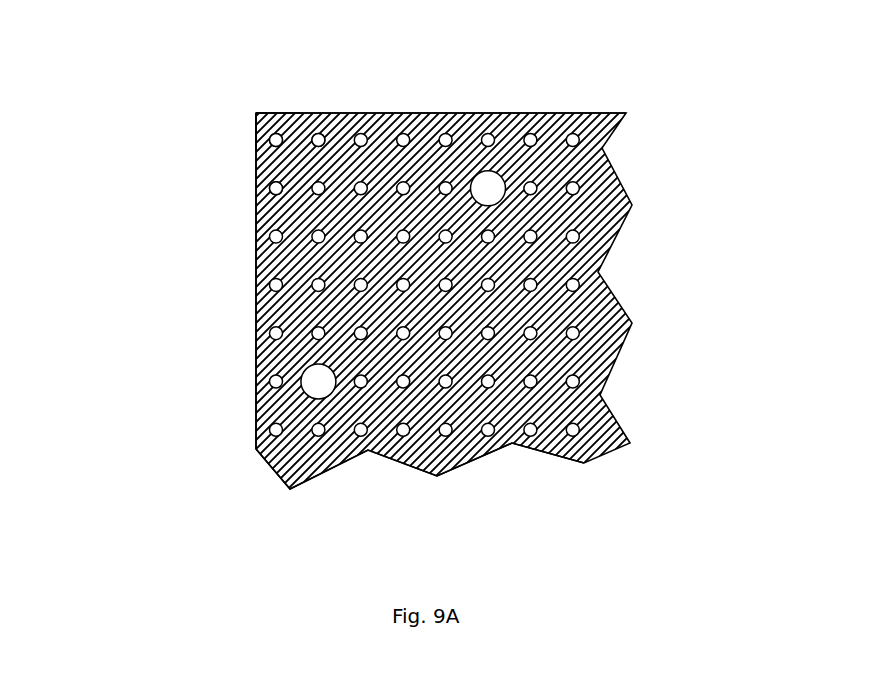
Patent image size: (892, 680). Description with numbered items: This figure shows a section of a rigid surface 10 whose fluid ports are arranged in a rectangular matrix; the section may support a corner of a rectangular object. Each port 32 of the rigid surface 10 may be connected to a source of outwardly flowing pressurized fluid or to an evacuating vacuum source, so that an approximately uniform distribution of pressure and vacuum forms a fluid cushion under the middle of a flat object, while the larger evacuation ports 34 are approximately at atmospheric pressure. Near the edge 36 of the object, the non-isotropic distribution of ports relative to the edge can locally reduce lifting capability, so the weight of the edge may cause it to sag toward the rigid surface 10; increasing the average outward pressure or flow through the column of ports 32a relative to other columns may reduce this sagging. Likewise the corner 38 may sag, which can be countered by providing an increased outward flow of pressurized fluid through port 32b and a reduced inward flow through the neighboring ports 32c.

The rigid surface 10 is at (172, 96).
The port 32 is at (403, 182).
The column of ports 32a is at (282, 93).
The port 32b is at (270, 143).
The ports 32c is at (313, 145).
The evacuation ports 34 is at (485, 173).
The edge 36 is at (256, 268).
The corner 38 is at (256, 113).